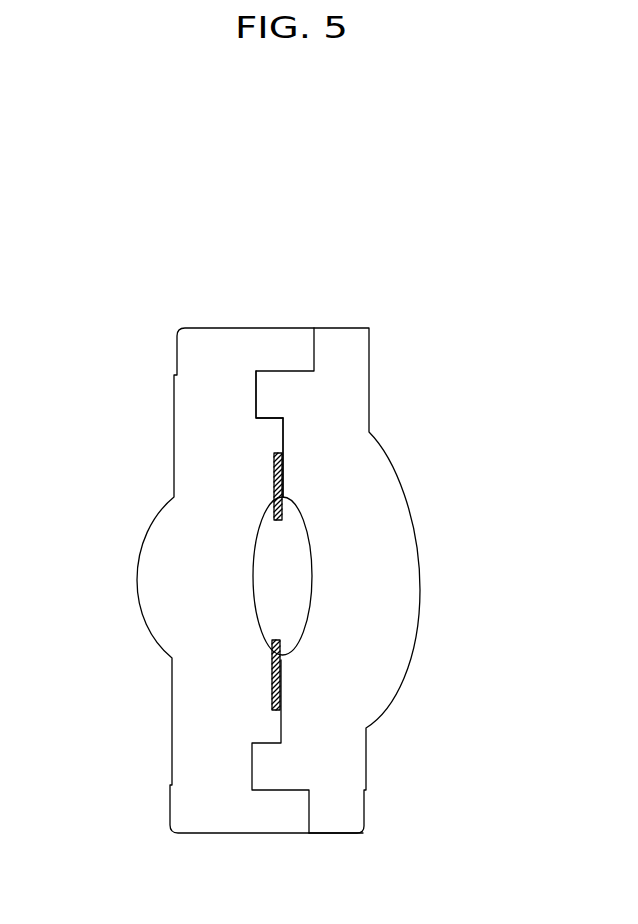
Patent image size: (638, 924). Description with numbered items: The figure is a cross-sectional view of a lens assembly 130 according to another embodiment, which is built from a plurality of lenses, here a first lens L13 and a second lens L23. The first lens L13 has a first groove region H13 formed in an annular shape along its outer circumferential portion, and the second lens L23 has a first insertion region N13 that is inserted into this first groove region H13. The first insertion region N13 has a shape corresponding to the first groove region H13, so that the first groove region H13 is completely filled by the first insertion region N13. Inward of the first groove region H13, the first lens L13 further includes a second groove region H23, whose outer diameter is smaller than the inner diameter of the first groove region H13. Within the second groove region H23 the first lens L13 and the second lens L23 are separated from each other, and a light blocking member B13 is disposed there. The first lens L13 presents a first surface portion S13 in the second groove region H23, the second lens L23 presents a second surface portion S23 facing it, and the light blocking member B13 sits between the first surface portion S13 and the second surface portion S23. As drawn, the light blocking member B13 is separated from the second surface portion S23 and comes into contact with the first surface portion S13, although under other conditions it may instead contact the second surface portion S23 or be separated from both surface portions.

The lens assembly 130 is at (447, 316).
The first insertion region N13 is at (269, 395).
The first groove region H13 is at (257, 391).
The second groove region H23 is at (274, 471).
The first surface portion S13 is at (274, 485).
The second surface portion S23 is at (284, 491).
The light blocking member B13 is at (287, 508).
The first lens L13 is at (236, 833).
The second lens L23 is at (333, 833).